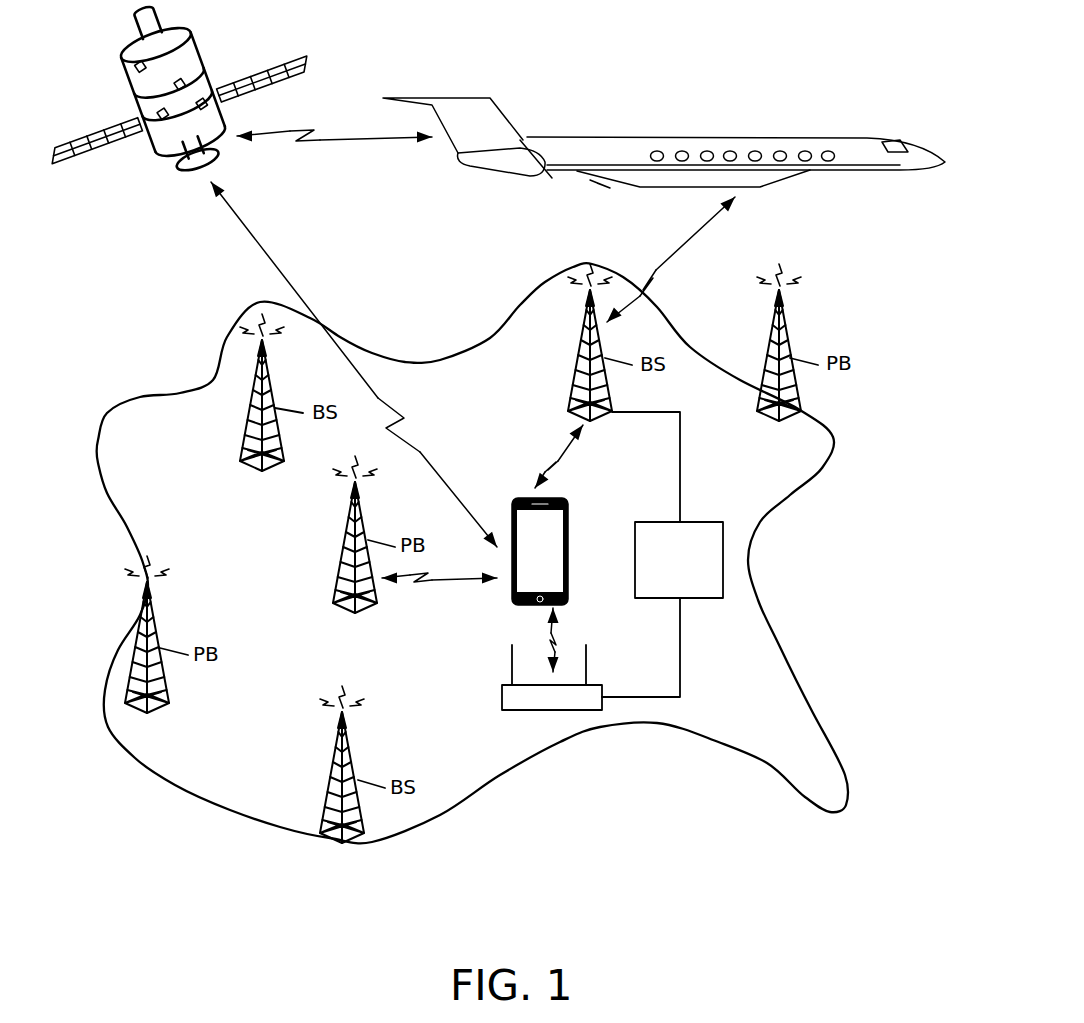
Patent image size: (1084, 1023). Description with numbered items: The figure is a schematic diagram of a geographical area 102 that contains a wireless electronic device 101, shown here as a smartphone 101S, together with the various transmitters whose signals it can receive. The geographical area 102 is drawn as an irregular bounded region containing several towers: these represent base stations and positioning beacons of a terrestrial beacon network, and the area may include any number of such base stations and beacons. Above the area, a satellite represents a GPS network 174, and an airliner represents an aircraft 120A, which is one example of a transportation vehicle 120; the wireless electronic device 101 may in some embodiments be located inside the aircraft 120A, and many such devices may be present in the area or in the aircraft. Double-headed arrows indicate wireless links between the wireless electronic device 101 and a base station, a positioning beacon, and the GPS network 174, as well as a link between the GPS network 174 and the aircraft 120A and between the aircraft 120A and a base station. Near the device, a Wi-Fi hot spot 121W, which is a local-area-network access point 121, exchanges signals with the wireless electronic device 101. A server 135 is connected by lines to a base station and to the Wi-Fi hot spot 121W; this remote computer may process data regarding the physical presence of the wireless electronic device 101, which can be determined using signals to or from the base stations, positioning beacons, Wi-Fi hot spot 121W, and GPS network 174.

The geographical area 102 is at (528, 757).
The GPS network 174 is at (222, 149).
The transportation vehicle 120 is at (678, 134).
The aircraft 120A is at (936, 150).
The wireless electronic device 101 is at (584, 533).
The smartphone 101S is at (570, 528).
The server 135 is at (698, 585).
The local-area-network access point 121 is at (488, 669).
The Wi-Fi hot spot 121W is at (500, 695).